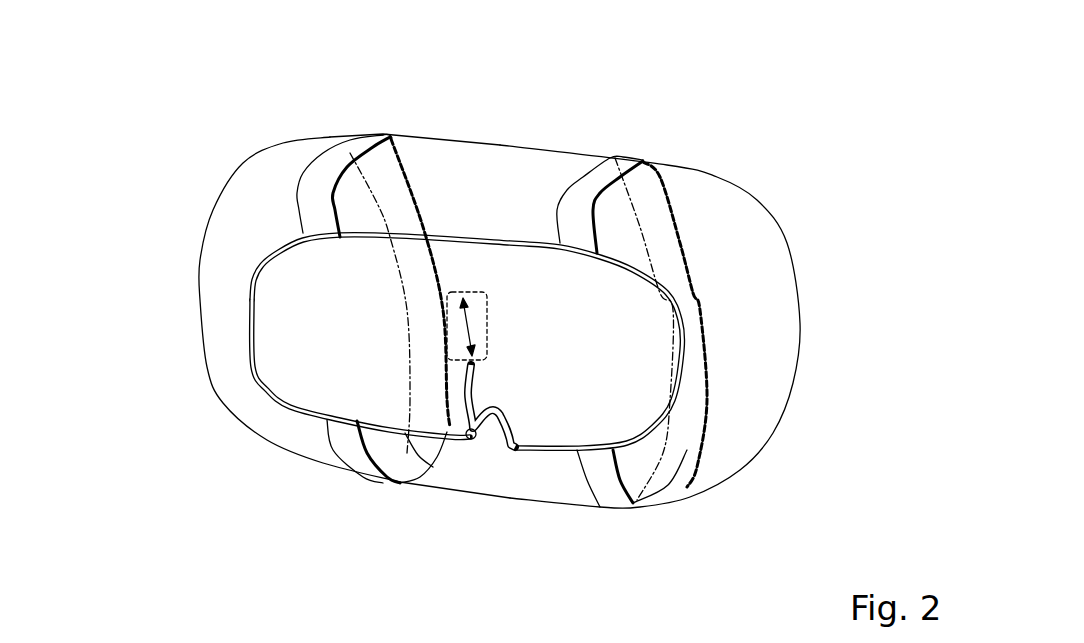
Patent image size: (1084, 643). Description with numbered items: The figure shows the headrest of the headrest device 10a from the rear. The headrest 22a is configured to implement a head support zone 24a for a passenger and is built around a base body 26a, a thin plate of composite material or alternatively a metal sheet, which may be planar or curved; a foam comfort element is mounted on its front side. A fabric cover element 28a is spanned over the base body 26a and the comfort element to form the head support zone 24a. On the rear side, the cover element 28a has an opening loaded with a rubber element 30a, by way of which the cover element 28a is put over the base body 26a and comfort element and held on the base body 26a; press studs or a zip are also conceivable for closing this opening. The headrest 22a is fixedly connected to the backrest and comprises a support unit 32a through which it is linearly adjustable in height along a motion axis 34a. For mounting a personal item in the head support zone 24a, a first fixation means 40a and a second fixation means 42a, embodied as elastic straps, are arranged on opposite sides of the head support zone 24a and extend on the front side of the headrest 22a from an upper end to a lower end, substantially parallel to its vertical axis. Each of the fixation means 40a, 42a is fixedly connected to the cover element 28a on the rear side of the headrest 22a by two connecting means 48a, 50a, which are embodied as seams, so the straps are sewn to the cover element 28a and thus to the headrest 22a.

The headrest device 10a is at (145, 165).
The headrest 22a is at (259, 212).
The head support zone 24a is at (826, 241).
The base body 26a is at (340, 347).
The cover element 28a is at (753, 327).
The rubber element 30a is at (483, 437).
The support unit 32a is at (487, 308).
The motion axis 34a is at (487, 327).
The first fixation means 40a is at (350, 150).
The second fixation means 42a is at (597, 180).
The connecting means 48a is at (578, 240).
The connecting means 50a is at (320, 228).